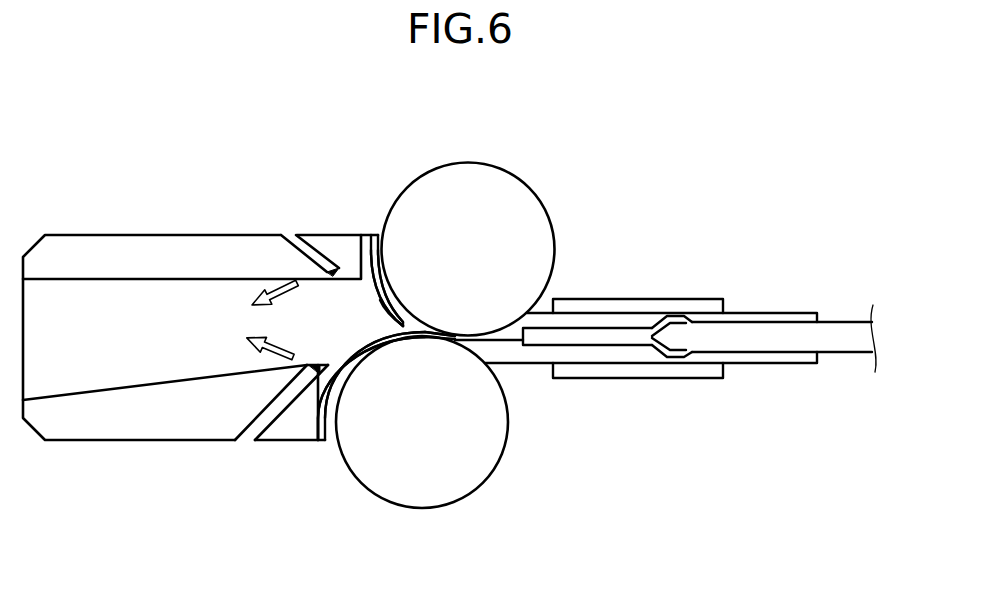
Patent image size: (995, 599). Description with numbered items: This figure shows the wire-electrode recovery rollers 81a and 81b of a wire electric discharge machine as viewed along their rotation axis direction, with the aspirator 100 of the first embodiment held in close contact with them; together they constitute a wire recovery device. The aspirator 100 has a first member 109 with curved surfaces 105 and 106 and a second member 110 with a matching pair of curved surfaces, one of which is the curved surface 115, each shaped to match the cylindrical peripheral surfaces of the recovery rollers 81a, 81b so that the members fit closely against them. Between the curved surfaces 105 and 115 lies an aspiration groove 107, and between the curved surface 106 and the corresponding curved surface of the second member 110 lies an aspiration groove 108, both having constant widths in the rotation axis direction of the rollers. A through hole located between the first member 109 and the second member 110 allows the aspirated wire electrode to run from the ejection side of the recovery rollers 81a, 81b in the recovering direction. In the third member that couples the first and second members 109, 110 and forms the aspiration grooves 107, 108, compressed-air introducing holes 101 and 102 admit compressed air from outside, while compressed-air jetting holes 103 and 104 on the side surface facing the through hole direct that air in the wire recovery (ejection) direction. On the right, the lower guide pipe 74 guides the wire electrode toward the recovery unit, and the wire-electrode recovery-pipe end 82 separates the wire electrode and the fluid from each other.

The aspirator 100 is at (80, 264).
The compressed-air introducing hole 101 is at (292, 243).
The compressed-air introducing hole 102 is at (275, 410).
The aspiration groove 107 is at (380, 256).
The aspiration groove 108 is at (320, 407).
The wire-electrode recovery roller 81a is at (461, 178).
The wire-electrode recovery roller 81b is at (398, 493).
The compressed-air jetting hole 103 is at (390, 318).
The curved surface 105 is at (385, 325).
The curved surface 115 is at (391, 313).
The first member 109 is at (392, 322).
The second member 110 is at (440, 334).
The compressed-air jetting hole 104 is at (338, 344).
The curved surface 106 is at (340, 378).
The wire-electrode recovery-pipe end 82 is at (623, 368).
The lower guide pipe 74 is at (843, 337).